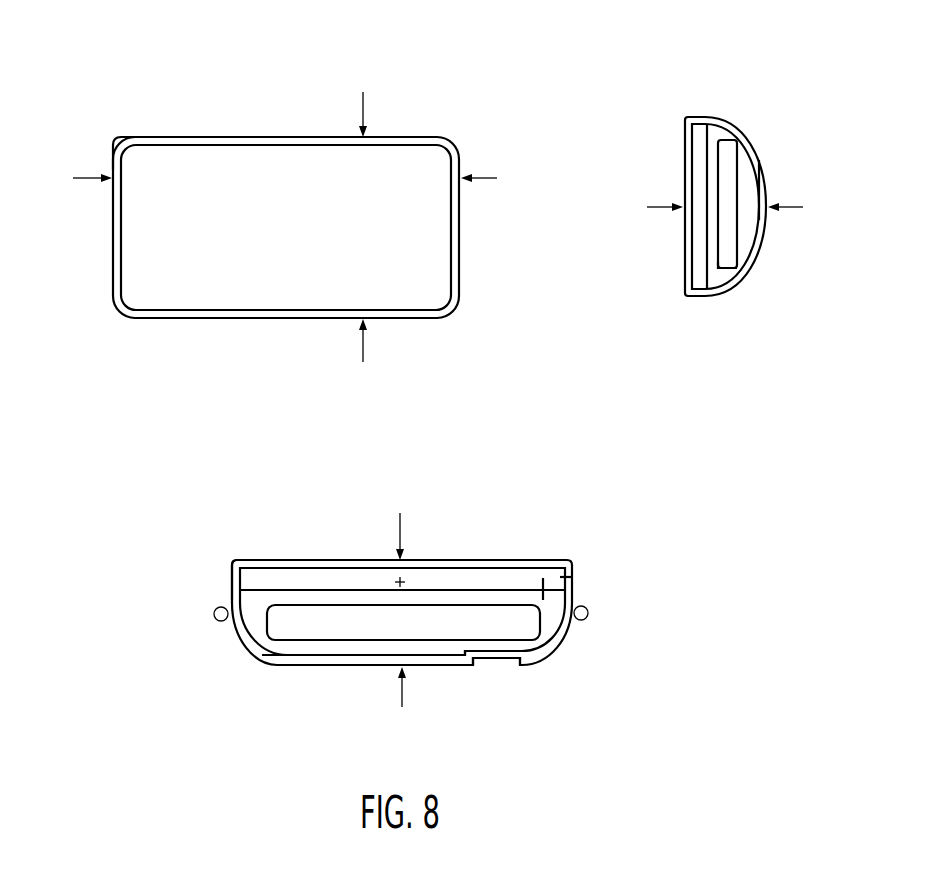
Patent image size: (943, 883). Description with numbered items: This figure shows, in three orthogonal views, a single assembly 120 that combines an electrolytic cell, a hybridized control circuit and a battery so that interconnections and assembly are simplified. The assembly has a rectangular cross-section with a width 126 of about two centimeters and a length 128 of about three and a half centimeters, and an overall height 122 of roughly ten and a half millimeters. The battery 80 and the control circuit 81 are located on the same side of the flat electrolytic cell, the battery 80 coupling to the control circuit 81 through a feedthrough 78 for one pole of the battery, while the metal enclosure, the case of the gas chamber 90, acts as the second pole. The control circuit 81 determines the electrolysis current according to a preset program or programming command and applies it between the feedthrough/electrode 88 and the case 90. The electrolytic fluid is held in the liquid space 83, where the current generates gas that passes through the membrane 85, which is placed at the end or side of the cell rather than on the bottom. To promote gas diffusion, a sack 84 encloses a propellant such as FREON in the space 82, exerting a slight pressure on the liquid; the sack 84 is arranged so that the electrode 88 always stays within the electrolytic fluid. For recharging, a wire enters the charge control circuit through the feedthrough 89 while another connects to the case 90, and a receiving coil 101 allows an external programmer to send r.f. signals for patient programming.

The assembly 120 is at (213, 104).
The width 126 is at (365, 211).
The length 128 is at (307, 181).
The case of the gas chamber 90 is at (117, 167).
The height 122 is at (594, 473).
The liquid space 83 is at (750, 175).
The sack 84 is at (737, 257).
The space 82 is at (727, 268).
The battery 80 is at (279, 578).
The feedthrough 78 is at (398, 578).
The control circuit 81 is at (445, 578).
The feedthrough 89 is at (572, 577).
The receiving coil 101 is at (214, 618).
The feedthrough/electrode 88 is at (544, 600).
The membrane 85 is at (494, 665).